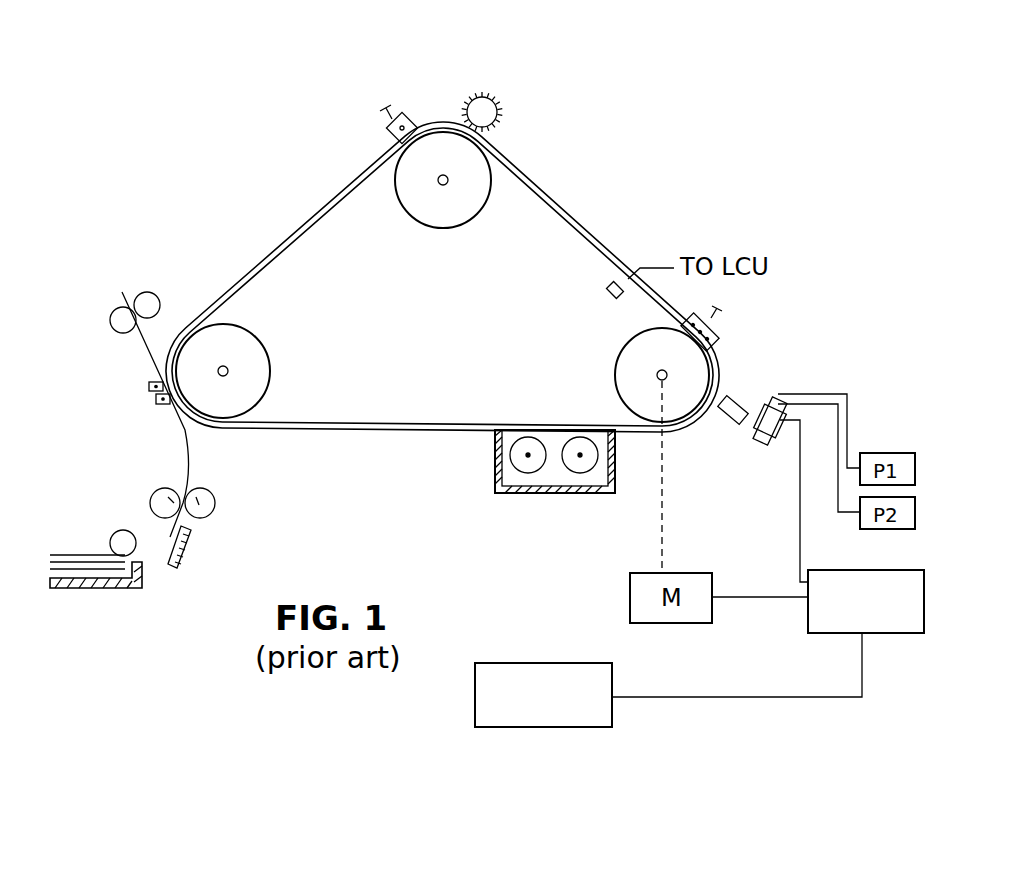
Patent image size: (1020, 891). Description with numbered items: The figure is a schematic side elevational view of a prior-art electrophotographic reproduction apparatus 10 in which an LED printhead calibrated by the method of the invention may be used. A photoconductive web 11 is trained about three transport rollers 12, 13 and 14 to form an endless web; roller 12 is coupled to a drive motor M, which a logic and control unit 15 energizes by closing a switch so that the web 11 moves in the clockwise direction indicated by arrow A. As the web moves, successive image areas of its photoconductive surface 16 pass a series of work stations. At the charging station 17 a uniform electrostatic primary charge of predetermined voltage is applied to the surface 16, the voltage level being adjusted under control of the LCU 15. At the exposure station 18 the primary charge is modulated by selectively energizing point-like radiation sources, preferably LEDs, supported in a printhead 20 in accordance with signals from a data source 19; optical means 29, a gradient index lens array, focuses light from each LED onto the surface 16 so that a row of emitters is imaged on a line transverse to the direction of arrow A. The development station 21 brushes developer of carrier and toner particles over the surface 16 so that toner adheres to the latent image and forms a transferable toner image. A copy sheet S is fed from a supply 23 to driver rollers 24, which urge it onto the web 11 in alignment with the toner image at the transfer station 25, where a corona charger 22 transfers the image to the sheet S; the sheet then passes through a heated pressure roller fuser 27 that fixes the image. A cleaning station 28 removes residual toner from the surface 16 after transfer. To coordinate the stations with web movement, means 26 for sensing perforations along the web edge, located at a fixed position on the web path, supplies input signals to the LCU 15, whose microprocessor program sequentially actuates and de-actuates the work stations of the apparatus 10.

The electrophotographic reproduction apparatus 10 is at (268, 92).
The photoconductive web 11 is at (250, 281).
The transport roller 12 is at (627, 341).
The transport roller 13 is at (421, 226).
The transport roller 14 is at (268, 347).
The logic and control unit 15 is at (808, 625).
The photoconductive surface 16 is at (560, 210).
The charging station 17 is at (736, 338).
The exposure station 18 is at (763, 390).
The data source 19 is at (612, 710).
The printhead 20 is at (760, 448).
The development station 21 is at (482, 483).
The corona charger 22 is at (140, 397).
The supply 23 is at (105, 593).
The driver roller 24 is at (160, 490).
The transfer station 25 is at (99, 462).
The means for sensing web perforation 26 is at (603, 287).
The heated pressure roller fuser 27 is at (110, 303).
The cleaning station 28 is at (500, 104).
The optical means 29 is at (725, 425).
The copy sheet S is at (146, 344).
The arrow A is at (487, 406).